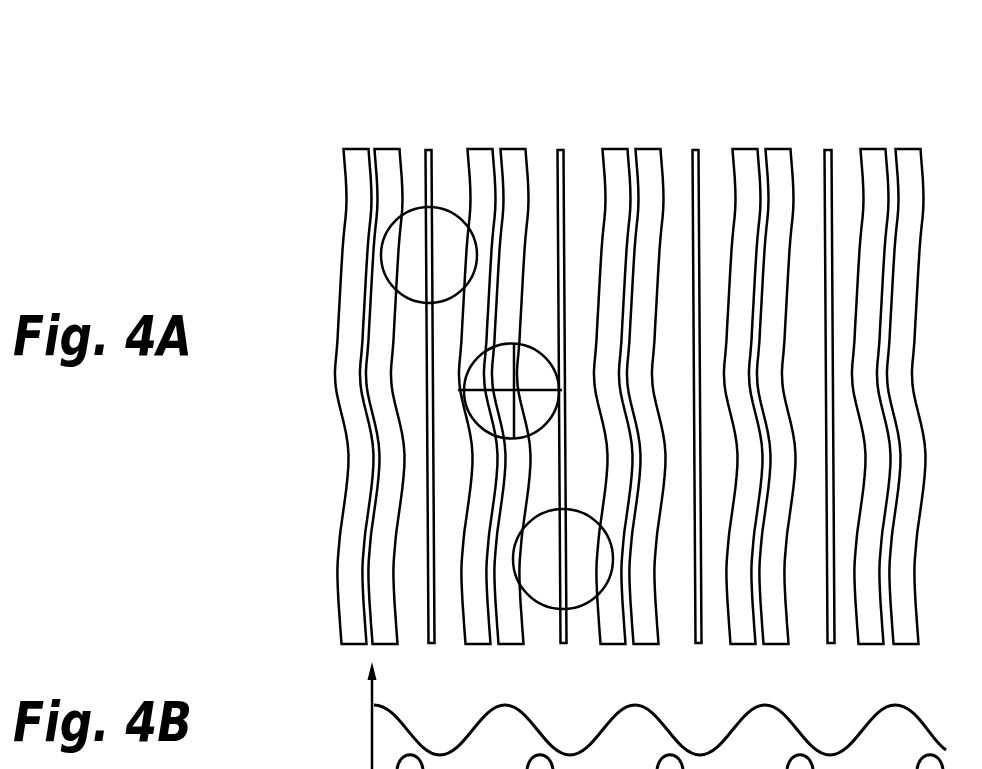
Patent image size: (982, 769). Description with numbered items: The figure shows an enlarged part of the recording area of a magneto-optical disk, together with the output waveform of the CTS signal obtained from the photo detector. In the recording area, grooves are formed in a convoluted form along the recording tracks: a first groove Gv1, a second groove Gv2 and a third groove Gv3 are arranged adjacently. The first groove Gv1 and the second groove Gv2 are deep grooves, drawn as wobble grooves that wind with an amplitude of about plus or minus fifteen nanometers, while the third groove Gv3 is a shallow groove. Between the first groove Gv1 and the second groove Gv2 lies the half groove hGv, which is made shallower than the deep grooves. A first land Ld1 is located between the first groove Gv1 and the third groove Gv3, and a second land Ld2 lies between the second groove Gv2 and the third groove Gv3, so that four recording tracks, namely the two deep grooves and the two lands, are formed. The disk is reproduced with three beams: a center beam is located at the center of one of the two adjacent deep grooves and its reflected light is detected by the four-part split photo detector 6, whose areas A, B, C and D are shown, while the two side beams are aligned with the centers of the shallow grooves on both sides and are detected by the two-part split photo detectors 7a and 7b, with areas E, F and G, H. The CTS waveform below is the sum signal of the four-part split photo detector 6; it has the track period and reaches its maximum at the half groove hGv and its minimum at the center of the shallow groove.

The first groove Gv1 is at (355, 149).
The second groove Gv2 is at (387, 149).
The third groove Gv3 is at (428, 149).
The half groove hGv is at (371, 149).
The first land Ld1 is at (450, 157).
The second land Ld2 is at (413, 157).
The two-part split photo detector 7a is at (381, 262).
The four-part split photo detector 6 is at (458, 390).
The two-part split photo detector 7b is at (513, 560).